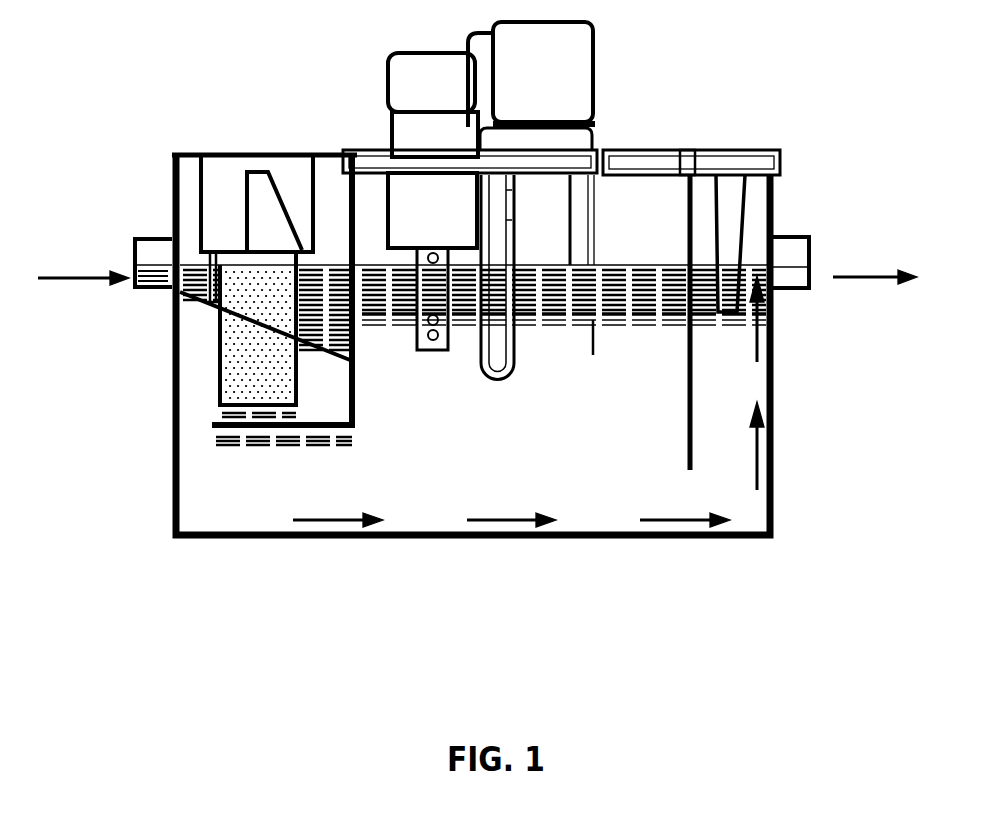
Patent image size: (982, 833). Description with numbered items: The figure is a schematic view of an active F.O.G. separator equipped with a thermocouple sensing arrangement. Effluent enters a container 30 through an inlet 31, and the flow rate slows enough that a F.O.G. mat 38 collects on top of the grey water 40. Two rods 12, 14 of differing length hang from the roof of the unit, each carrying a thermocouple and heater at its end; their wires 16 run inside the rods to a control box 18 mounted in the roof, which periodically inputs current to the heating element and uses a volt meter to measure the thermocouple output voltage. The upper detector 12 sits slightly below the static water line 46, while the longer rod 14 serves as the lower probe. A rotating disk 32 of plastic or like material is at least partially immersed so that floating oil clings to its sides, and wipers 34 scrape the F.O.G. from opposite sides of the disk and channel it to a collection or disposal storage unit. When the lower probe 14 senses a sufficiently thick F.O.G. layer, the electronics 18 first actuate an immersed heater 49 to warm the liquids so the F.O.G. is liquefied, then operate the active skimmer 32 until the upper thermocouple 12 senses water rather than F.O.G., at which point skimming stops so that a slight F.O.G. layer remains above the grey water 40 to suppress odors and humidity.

The rod 12 is at (594, 227).
The rod 14 is at (705, 168).
The sensor wires 16 is at (593, 208).
The control box 18 is at (558, 76).
The container 30 is at (775, 337).
The inlet 31 is at (153, 235).
The rotating disk 32 is at (440, 350).
The wipers 34 is at (449, 225).
The F.O.G. mat 38 is at (570, 302).
The grey water 40 is at (507, 447).
The static water line 46 is at (613, 263).
The heater 49 is at (508, 350).